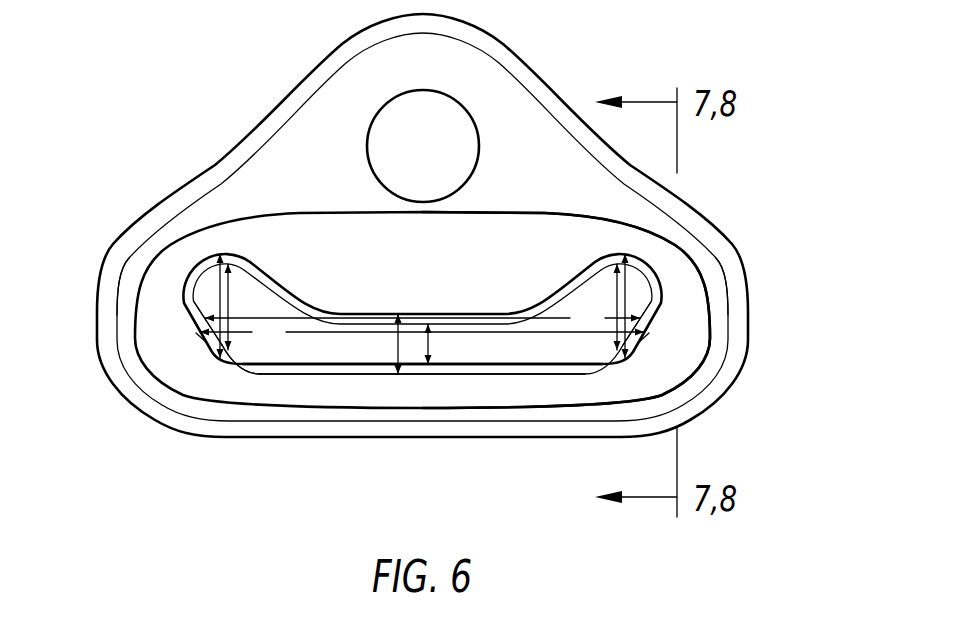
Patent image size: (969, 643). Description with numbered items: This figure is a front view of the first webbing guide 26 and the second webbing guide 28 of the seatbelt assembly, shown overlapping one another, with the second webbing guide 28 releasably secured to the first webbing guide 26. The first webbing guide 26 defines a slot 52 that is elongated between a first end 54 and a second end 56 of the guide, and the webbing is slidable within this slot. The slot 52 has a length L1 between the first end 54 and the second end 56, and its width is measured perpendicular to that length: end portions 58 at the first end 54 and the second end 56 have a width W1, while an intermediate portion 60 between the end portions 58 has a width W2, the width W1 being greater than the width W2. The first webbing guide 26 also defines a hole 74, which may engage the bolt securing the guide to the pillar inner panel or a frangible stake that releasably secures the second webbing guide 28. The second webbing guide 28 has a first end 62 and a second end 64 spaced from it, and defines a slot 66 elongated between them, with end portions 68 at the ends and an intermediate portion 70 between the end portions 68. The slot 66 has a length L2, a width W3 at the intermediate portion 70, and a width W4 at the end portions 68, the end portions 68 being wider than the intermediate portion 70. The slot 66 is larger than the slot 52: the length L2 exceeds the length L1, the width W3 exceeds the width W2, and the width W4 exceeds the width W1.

The first webbing guide 26 is at (335, 103).
The second webbing guide 28 is at (303, 217).
The hole 74 is at (470, 118).
The first end 62 is at (153, 292).
The second end 64 is at (690, 292).
The first end 54 is at (127, 320).
The second end 56 is at (715, 320).
The end portions 58 is at (210, 280).
The intermediate portion 60 is at (412, 347).
The end portions 68 is at (203, 293).
The slot 66 is at (293, 347).
The slot 52 is at (340, 347).
The intermediate portion 70 is at (362, 347).
The width of end portions W1 is at (228, 290).
The width of intermediate portion W2 is at (430, 347).
The width at intermediate portion W3 is at (397, 338).
The width at end portions W4 is at (212, 342).
The length of slot L1 is at (422, 318).
The length of slot L2 is at (422, 333).